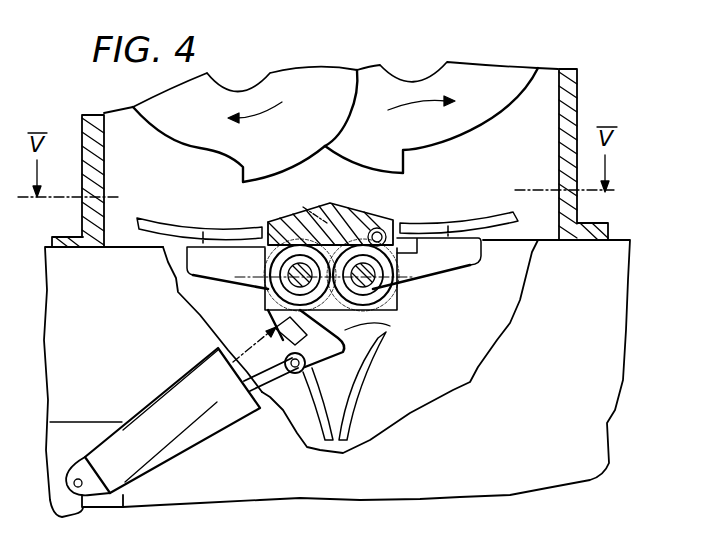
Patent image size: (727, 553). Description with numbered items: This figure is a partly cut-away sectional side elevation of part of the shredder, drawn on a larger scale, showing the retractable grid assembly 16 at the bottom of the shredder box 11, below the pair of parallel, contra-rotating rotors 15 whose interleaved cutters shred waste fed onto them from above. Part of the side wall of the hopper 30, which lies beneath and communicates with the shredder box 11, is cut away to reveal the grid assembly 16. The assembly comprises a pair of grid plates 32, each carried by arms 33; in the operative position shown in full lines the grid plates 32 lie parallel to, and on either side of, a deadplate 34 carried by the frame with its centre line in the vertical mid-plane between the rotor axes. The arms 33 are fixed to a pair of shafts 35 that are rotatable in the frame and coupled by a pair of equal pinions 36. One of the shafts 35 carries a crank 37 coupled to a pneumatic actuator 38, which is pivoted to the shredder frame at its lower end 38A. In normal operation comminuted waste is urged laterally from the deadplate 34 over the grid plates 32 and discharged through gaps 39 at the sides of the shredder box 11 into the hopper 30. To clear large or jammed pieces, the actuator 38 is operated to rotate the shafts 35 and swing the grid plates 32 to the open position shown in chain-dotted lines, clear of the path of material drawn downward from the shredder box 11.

The shredder box 11 is at (581, 85).
The rotors 15 is at (322, 88).
The retractable grid assembly 16 is at (459, 371).
The hopper 30 is at (575, 356).
The grid plates 32 is at (211, 230).
The arms 33 is at (207, 266).
The deadplate 34 is at (350, 206).
The shafts 35 is at (266, 296).
The pinions 36 is at (246, 284).
The crank 37 is at (312, 210).
The pneumatic actuator 38 is at (142, 418).
The lower end of actuator 38A is at (80, 505).
The gaps 39 is at (120, 225).